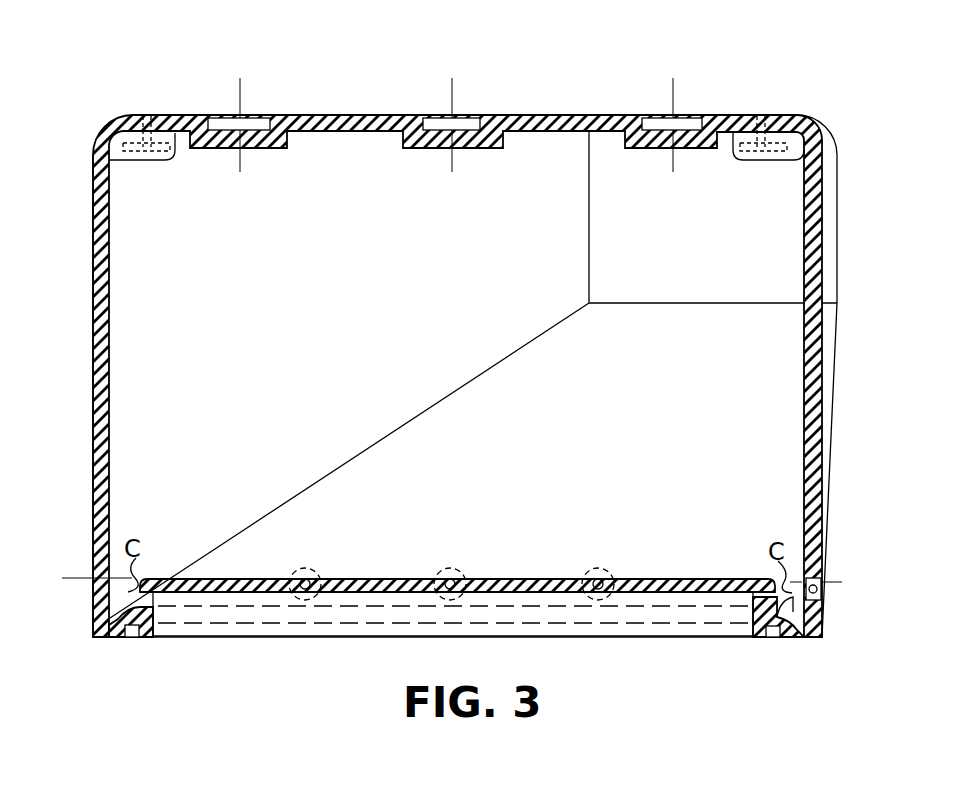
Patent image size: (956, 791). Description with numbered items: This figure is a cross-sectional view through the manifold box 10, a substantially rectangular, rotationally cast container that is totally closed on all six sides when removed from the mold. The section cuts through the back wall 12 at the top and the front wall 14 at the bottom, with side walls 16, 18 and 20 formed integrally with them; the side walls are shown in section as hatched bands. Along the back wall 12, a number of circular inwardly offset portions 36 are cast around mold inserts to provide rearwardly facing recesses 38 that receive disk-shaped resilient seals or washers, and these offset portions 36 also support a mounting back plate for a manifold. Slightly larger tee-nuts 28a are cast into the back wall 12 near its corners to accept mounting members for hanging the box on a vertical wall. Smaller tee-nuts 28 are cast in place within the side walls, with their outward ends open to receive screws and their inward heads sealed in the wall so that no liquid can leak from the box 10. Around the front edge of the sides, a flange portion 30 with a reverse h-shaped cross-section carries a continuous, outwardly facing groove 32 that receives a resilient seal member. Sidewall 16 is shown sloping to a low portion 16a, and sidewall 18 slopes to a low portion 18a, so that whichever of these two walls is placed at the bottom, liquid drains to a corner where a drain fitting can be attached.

The manifold box 10 is at (533, 93).
The back wall 12 is at (313, 112).
The front wall 14 is at (527, 640).
The side wall 16 is at (835, 380).
The low portion 16a is at (838, 217).
The side wall 18 is at (153, 317).
The low portion 18a is at (773, 251).
The side wall 20 is at (93, 250).
The tee-nuts 28 is at (585, 568).
The tee-nuts 28a is at (147, 112).
The flange portion 30 is at (157, 613).
The groove 32 is at (133, 640).
The inwardly offset portions 36 is at (403, 148).
The recesses 38 is at (253, 115).